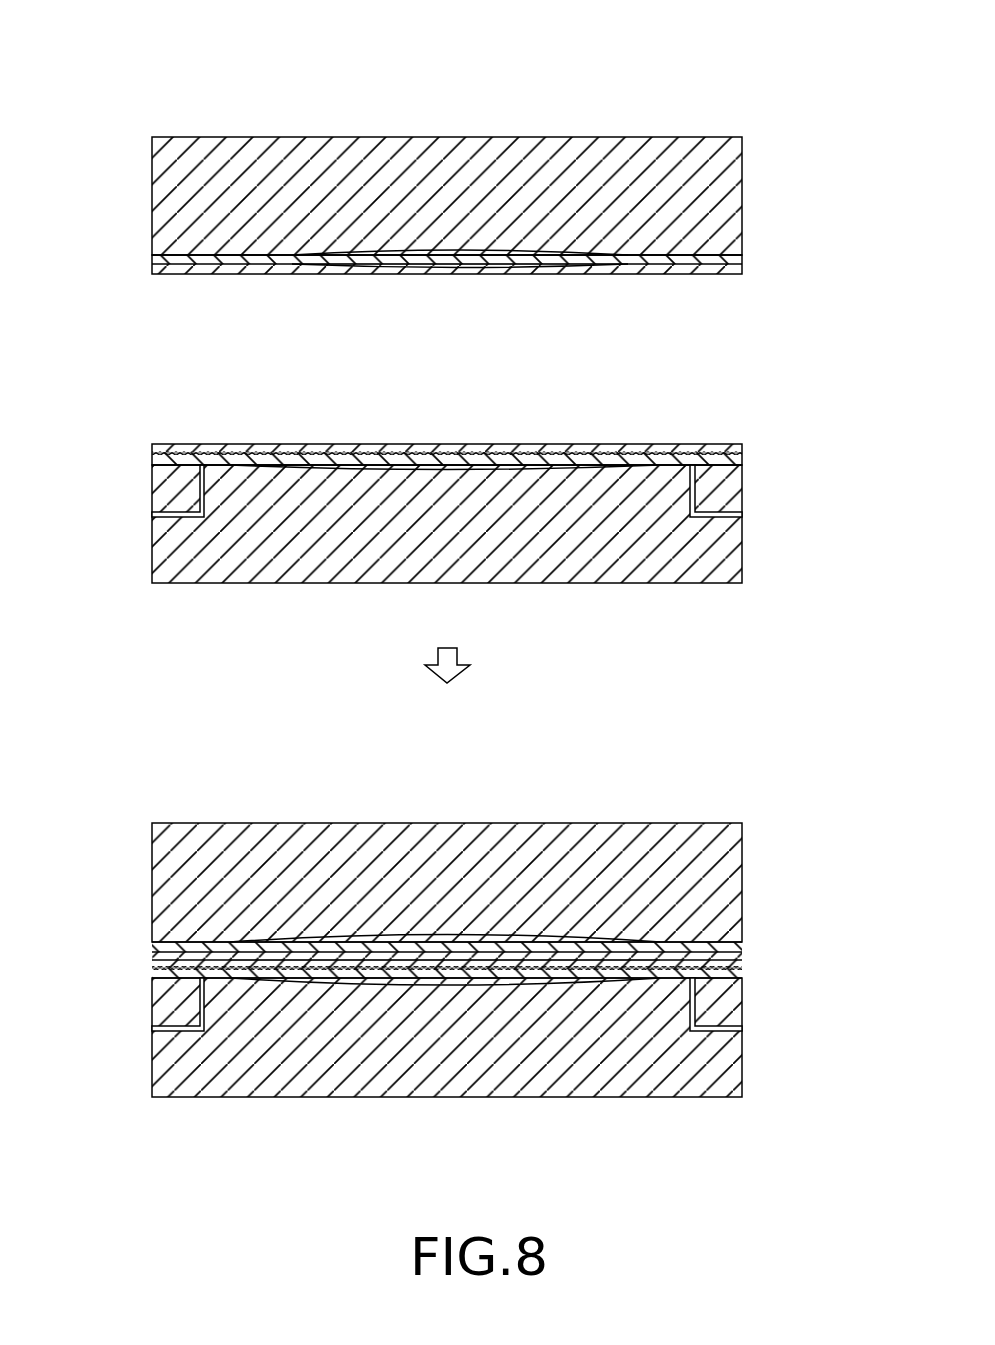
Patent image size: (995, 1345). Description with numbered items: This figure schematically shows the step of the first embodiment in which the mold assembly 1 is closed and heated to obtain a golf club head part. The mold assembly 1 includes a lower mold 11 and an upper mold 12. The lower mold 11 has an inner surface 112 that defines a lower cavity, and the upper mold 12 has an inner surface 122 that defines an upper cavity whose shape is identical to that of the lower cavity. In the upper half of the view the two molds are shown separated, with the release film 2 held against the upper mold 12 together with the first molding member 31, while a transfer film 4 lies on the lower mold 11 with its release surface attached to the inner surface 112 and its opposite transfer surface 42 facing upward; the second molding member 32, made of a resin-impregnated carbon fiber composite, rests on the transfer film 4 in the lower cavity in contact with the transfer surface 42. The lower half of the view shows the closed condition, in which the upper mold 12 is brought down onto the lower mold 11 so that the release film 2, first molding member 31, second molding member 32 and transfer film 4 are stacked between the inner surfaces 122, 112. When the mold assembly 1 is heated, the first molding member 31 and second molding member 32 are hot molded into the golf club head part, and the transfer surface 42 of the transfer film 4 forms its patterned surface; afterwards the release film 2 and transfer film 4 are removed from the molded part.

The mold assembly 1 is at (448, 552).
The lower mold 11 is at (498, 728).
The upper mold 12 is at (500, 539).
The inner surface 112 is at (548, 458).
The inner surface 122 is at (311, 268).
The release film 2 is at (455, 268).
The first molding member 31 is at (603, 275).
The second molding member 32 is at (261, 443).
The transfer film 4 is at (472, 420).
The transfer surface 42 is at (365, 447).